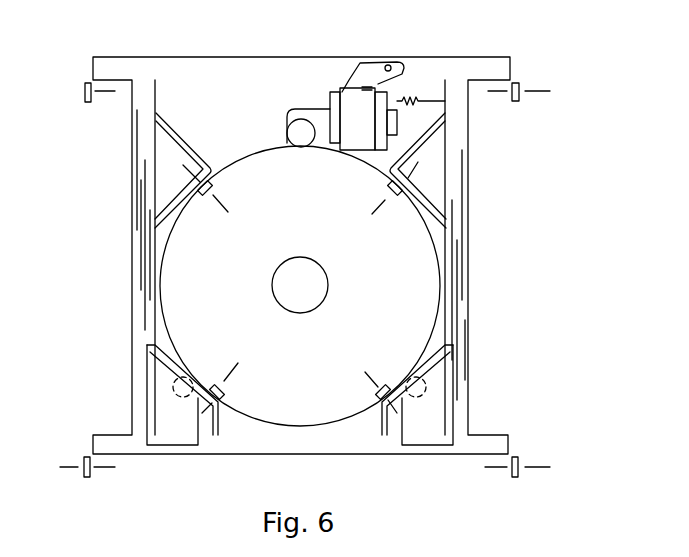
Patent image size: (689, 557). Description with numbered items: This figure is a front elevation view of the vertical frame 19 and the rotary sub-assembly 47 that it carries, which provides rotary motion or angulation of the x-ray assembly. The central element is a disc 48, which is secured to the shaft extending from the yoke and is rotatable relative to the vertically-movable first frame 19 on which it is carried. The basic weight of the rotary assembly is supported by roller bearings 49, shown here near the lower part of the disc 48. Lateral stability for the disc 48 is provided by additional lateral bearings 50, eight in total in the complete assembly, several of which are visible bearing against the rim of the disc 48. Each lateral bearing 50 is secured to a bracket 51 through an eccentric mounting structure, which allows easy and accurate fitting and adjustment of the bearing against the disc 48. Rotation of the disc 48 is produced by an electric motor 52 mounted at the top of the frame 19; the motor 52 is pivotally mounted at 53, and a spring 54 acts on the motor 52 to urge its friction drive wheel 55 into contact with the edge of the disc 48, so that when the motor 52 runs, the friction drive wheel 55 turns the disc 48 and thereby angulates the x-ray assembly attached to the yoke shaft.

The vertical frame 19 is at (462, 163).
The sub-assembly 47 is at (305, 255).
The disc 48 is at (372, 336).
The roller bearings 49 is at (188, 377).
The lateral bearings 50 is at (393, 197).
The bracket 51 is at (435, 208).
The electric motor 52 is at (355, 105).
The pivotal mounting 53 is at (396, 62).
The spring 54 is at (420, 98).
The friction drive wheel 55 is at (300, 133).